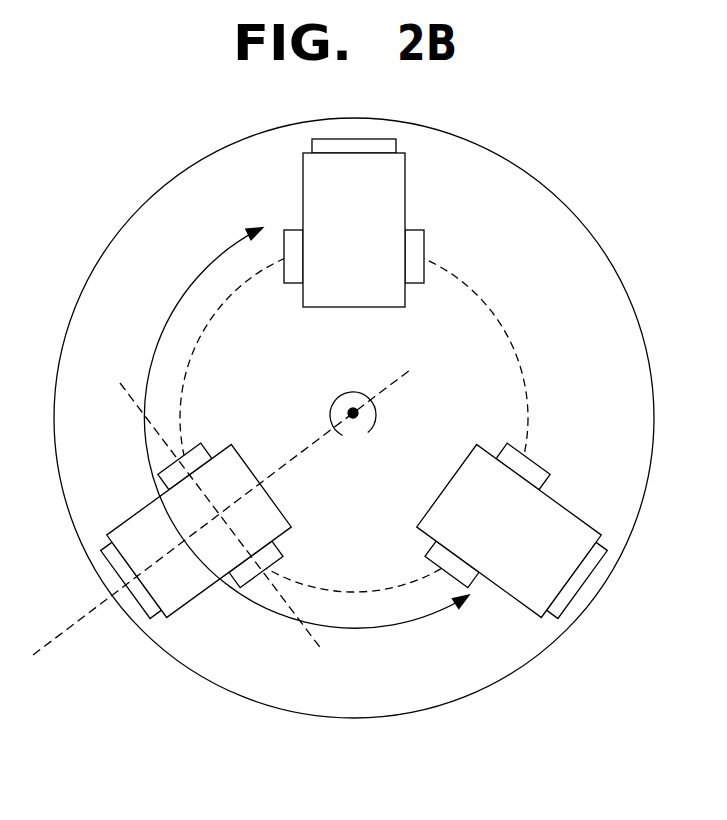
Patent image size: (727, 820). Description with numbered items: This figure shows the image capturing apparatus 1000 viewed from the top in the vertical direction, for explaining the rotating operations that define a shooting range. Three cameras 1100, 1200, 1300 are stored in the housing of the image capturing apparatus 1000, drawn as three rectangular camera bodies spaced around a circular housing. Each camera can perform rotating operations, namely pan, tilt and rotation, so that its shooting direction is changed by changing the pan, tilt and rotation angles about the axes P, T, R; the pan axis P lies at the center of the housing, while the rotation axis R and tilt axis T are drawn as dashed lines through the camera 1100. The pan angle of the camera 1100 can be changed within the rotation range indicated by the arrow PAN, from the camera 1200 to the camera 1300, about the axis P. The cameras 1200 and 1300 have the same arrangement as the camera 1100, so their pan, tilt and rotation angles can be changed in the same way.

The image capturing apparatus 1000 is at (543, 185).
The camera 1100 is at (188, 603).
The camera 1200 is at (507, 597).
The camera 1300 is at (303, 188).
The pan axis P is at (353, 422).
The rotation axis R is at (209, 524).
The tilt axis T is at (230, 534).
The pan rotation range PAN is at (423, 622).